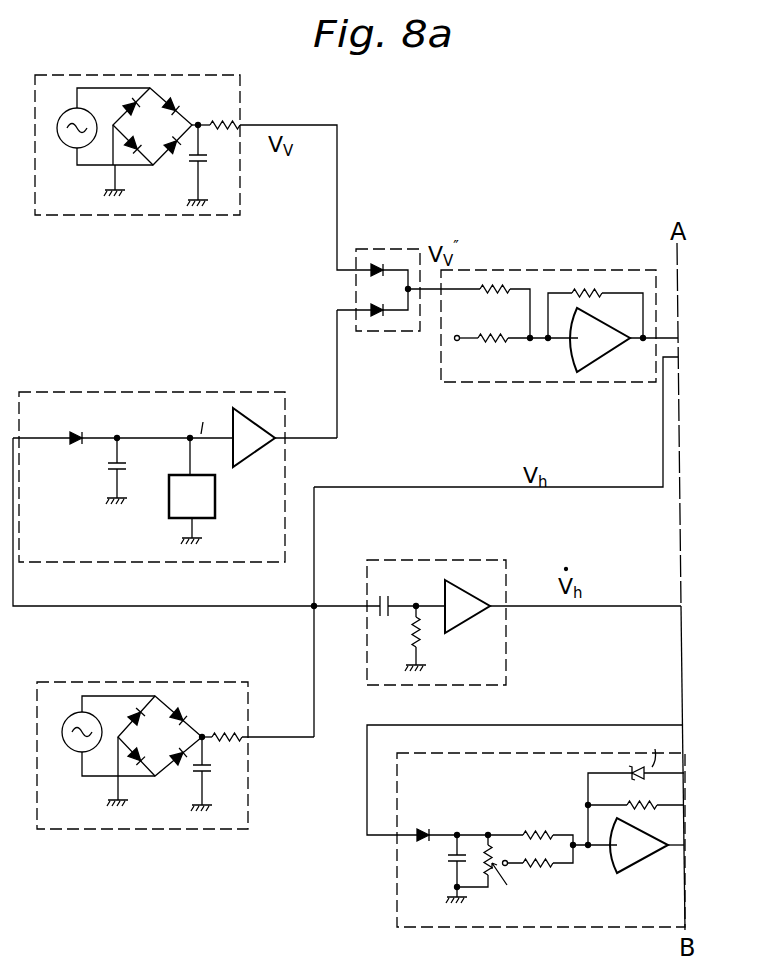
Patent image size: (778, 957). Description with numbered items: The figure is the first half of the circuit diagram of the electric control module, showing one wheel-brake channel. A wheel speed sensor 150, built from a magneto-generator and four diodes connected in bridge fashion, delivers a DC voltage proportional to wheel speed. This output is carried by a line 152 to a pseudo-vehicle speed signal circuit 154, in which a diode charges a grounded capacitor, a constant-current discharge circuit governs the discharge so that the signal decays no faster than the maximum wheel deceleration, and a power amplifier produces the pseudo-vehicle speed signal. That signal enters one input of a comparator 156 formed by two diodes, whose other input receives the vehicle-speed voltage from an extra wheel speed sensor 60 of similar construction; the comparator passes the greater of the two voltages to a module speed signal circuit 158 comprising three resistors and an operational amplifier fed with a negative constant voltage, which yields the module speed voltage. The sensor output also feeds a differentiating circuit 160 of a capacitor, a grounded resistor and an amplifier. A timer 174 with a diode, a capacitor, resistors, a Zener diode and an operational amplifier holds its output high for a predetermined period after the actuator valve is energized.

The extra wheel speed sensor 60 is at (98, 215).
The wheel speed sensor 150 is at (128, 654).
The line 152 is at (314, 643).
The pseudo-vehicle speed signal circuit 154 is at (110, 392).
The comparator 156 is at (415, 224).
The module speed signal circuit 158 is at (563, 251).
The differentiating circuit 160 is at (470, 539).
The timer 174 is at (522, 753).